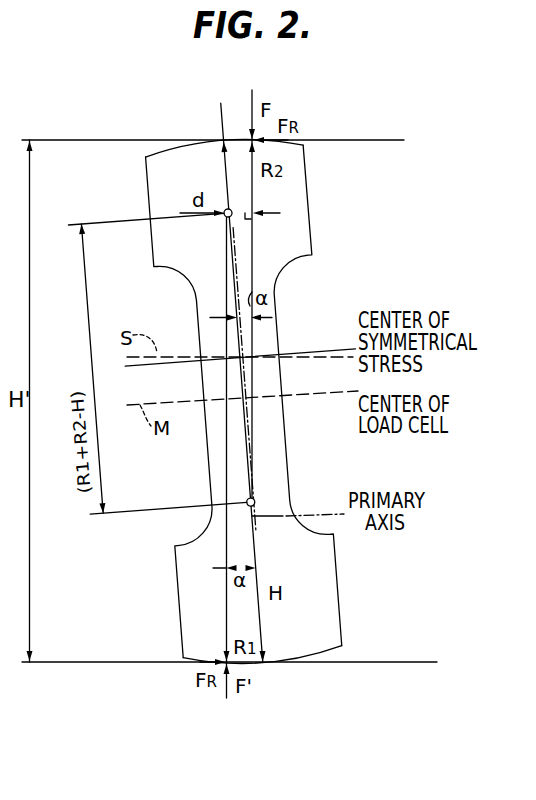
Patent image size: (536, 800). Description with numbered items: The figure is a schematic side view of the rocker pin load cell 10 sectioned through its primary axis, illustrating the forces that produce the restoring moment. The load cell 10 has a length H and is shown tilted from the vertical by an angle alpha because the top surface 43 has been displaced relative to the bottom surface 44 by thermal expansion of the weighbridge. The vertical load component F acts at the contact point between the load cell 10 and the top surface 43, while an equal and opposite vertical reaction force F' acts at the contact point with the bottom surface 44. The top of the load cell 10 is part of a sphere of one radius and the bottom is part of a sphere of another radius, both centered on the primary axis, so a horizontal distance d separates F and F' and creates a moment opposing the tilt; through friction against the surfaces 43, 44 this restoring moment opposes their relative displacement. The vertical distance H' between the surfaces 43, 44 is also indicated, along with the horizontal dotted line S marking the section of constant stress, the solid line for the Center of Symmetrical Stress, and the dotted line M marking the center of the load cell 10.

The load cell 10 is at (153, 318).
The top surface 43 is at (141, 143).
The bottom surface 44 is at (161, 661).